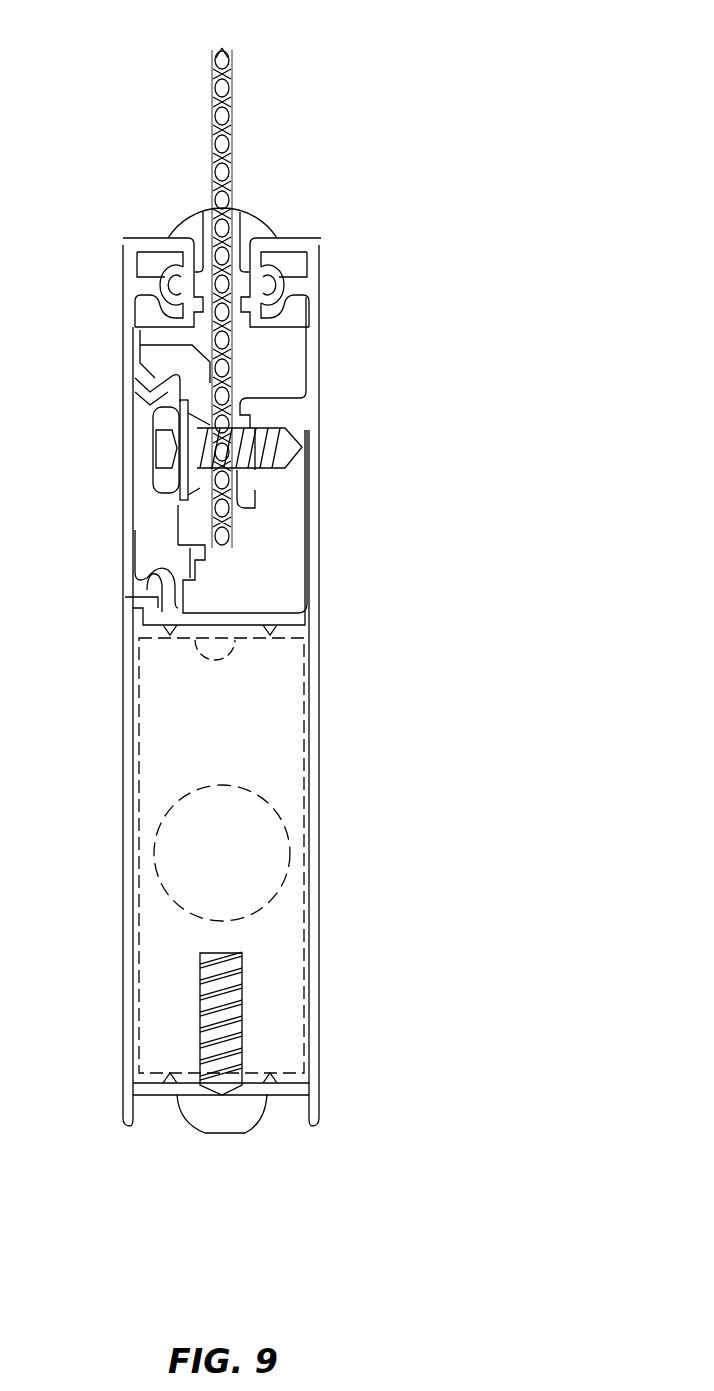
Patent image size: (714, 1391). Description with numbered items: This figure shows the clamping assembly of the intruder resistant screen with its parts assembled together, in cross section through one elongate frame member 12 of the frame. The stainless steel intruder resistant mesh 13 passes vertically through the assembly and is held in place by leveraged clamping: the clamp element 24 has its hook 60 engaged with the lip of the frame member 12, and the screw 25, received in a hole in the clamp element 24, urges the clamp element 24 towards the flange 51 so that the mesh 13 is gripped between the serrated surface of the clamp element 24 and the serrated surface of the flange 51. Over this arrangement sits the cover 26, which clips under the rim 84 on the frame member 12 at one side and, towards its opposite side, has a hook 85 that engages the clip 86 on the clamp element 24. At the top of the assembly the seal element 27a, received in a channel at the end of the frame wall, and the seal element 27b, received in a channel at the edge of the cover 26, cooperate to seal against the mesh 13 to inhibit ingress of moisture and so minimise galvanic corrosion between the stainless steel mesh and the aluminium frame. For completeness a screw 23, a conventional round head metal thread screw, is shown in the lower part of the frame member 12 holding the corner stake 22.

The elongate frame member 12 is at (320, 713).
The intruder resistant mesh 13 is at (218, 50).
The corner stake 22 is at (305, 963).
The screw 23 is at (195, 1113).
The clamp element 24 is at (150, 345).
The screw 25 is at (168, 475).
The cover 26 is at (122, 238).
The seal element 27a is at (250, 215).
The seal element 27b is at (195, 215).
The flange 51 is at (280, 412).
The hook 60 is at (215, 553).
The rim 84 is at (125, 595).
The hook 85 is at (153, 398).
The clip 86 is at (140, 365).